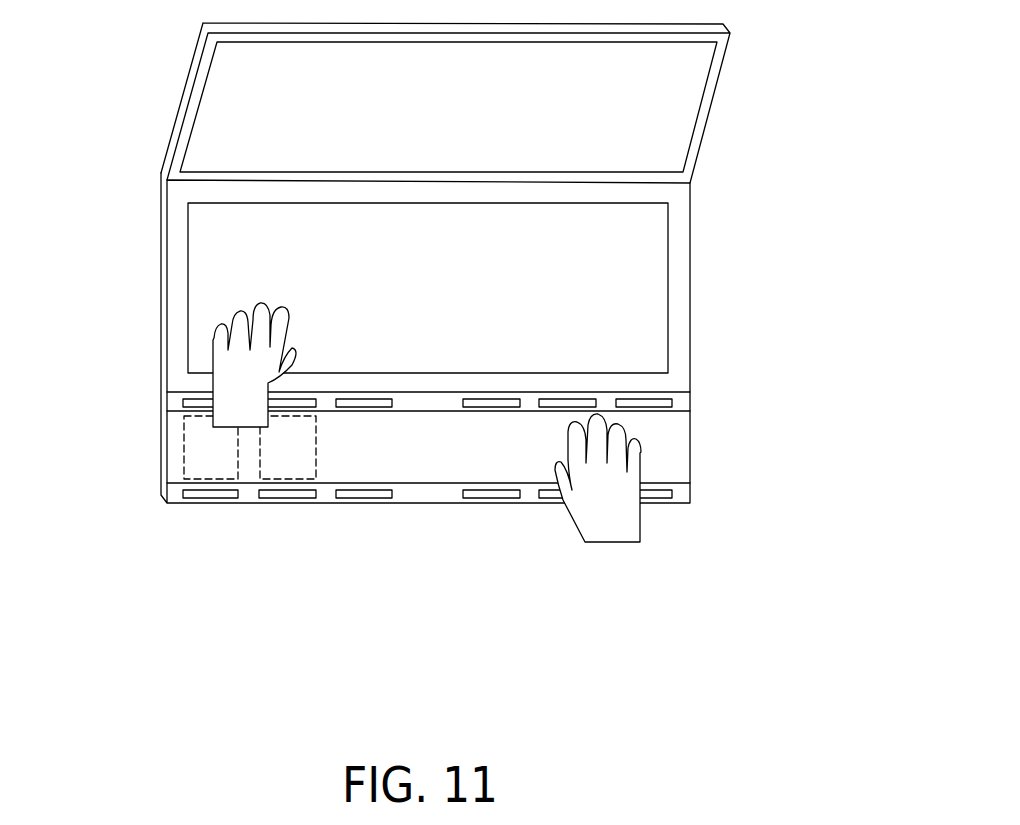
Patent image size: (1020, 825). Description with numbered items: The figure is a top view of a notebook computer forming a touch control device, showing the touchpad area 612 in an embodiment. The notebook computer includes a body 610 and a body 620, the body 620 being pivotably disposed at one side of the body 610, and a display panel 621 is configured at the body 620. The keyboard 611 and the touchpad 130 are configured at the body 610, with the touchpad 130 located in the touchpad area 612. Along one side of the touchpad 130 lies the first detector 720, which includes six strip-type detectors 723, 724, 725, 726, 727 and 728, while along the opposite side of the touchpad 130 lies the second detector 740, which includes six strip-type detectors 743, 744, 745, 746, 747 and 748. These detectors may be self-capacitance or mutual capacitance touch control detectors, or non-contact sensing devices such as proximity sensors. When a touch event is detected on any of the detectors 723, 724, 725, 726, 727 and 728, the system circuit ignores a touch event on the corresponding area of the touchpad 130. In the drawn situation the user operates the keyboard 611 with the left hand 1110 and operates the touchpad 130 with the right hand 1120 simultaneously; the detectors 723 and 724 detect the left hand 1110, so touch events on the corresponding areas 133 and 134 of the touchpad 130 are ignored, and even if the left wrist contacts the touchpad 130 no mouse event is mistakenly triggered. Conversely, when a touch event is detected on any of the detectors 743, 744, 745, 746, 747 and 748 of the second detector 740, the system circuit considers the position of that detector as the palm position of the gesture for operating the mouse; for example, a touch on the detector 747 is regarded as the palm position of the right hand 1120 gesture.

The body 620 is at (722, 75).
The display panel 621 is at (690, 138).
The body 610 is at (690, 230).
The keyboard 611 is at (453, 307).
The touchpad area 612 is at (700, 395).
The first detector 720 is at (428, 379).
The detector 723 is at (193, 403).
The detector 724 is at (298, 402).
The detector 725 is at (363, 403).
The detector 726 is at (498, 402).
The detector 727 is at (577, 402).
The detector 728 is at (647, 402).
The touchpad 130 is at (453, 463).
The corresponding area 133 is at (183, 467).
The corresponding area 134 is at (316, 462).
The second detector 740 is at (427, 583).
The detector 743 is at (217, 499).
The detector 744 is at (283, 499).
The detector 745 is at (363, 499).
The detector 746 is at (483, 499).
The detector 747 is at (548, 499).
The detector 748 is at (621, 557).
The left hand 1110 is at (212, 343).
The right hand 1120 is at (640, 452).